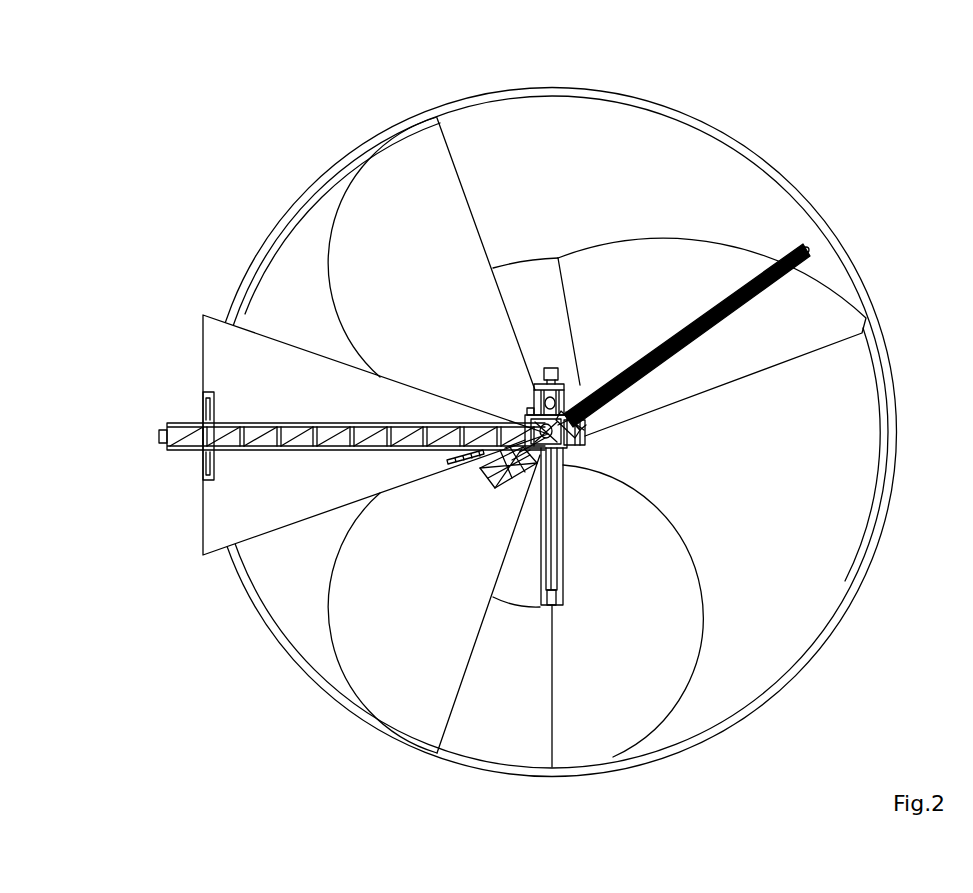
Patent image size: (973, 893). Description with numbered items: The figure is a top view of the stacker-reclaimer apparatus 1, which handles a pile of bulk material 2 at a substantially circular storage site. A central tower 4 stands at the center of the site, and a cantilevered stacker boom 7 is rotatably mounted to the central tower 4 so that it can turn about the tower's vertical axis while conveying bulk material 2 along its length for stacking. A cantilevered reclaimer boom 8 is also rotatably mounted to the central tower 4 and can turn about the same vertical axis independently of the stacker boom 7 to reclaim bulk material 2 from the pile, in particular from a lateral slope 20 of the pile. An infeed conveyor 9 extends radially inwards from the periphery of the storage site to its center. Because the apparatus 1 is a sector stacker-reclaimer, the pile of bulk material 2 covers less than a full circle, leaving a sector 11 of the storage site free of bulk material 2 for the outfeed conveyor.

The stacker-reclaimer apparatus 1 is at (302, 168).
The pile of bulk material 2 is at (597, 127).
The central tower 4 is at (585, 451).
The stacker boom 7 is at (563, 533).
The reclaimer boom 8 is at (743, 285).
The infeed conveyor 9 is at (190, 453).
The sector 11 is at (212, 353).
The lateral slope 20 is at (807, 323).